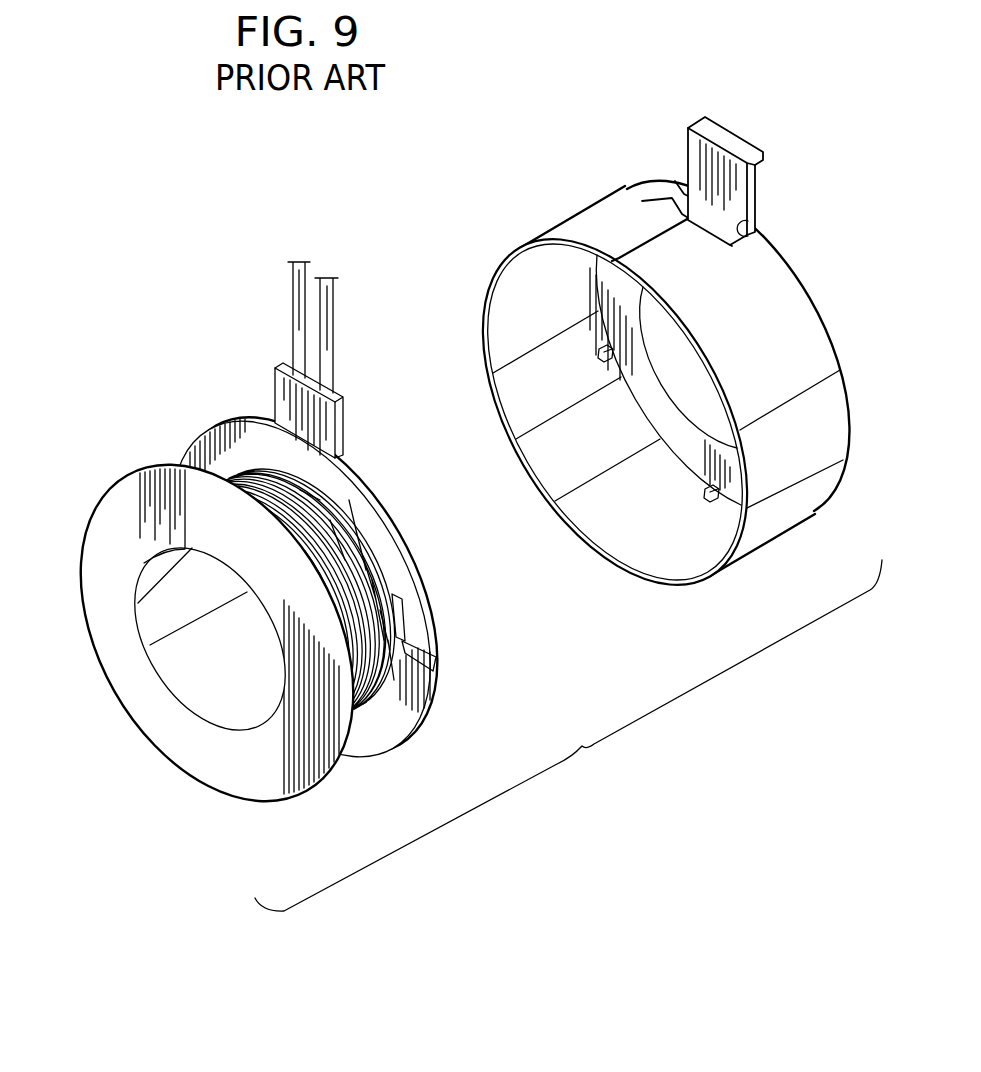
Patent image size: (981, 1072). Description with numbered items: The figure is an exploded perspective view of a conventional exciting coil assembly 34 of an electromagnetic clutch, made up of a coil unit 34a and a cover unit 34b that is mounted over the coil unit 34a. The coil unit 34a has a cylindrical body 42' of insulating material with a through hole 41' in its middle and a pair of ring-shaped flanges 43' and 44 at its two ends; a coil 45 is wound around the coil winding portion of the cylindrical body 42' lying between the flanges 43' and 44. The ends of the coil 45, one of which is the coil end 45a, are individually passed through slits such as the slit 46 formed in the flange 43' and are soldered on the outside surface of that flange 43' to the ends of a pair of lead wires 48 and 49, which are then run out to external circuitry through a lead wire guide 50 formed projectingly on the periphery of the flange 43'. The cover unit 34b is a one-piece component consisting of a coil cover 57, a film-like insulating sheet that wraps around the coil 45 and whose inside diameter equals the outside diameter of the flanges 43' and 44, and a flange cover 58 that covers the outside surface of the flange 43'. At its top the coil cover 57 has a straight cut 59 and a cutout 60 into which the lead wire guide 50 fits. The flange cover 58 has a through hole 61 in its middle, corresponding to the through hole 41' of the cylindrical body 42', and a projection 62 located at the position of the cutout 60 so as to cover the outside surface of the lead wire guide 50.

The exciting coil assembly 34 is at (453, 479).
The coil unit 34a is at (270, 558).
The cover unit 34b is at (638, 347).
The through hole 41' is at (200, 639).
The cylindrical body 42' is at (140, 562).
The flange 43' is at (311, 587).
The flange 44 is at (251, 772).
The coil 45 is at (374, 712).
The coil end 45a is at (405, 618).
The slit 46 is at (438, 658).
The lead wire 48 is at (326, 330).
The lead wire 49 is at (297, 318).
The lead wire guide 50 is at (343, 420).
The coil cover 57 is at (612, 512).
The flange cover 58 is at (678, 457).
The straight cut 59 is at (647, 236).
The cutout 60 is at (752, 228).
The through hole 61 is at (615, 398).
The projection 62 is at (737, 196).